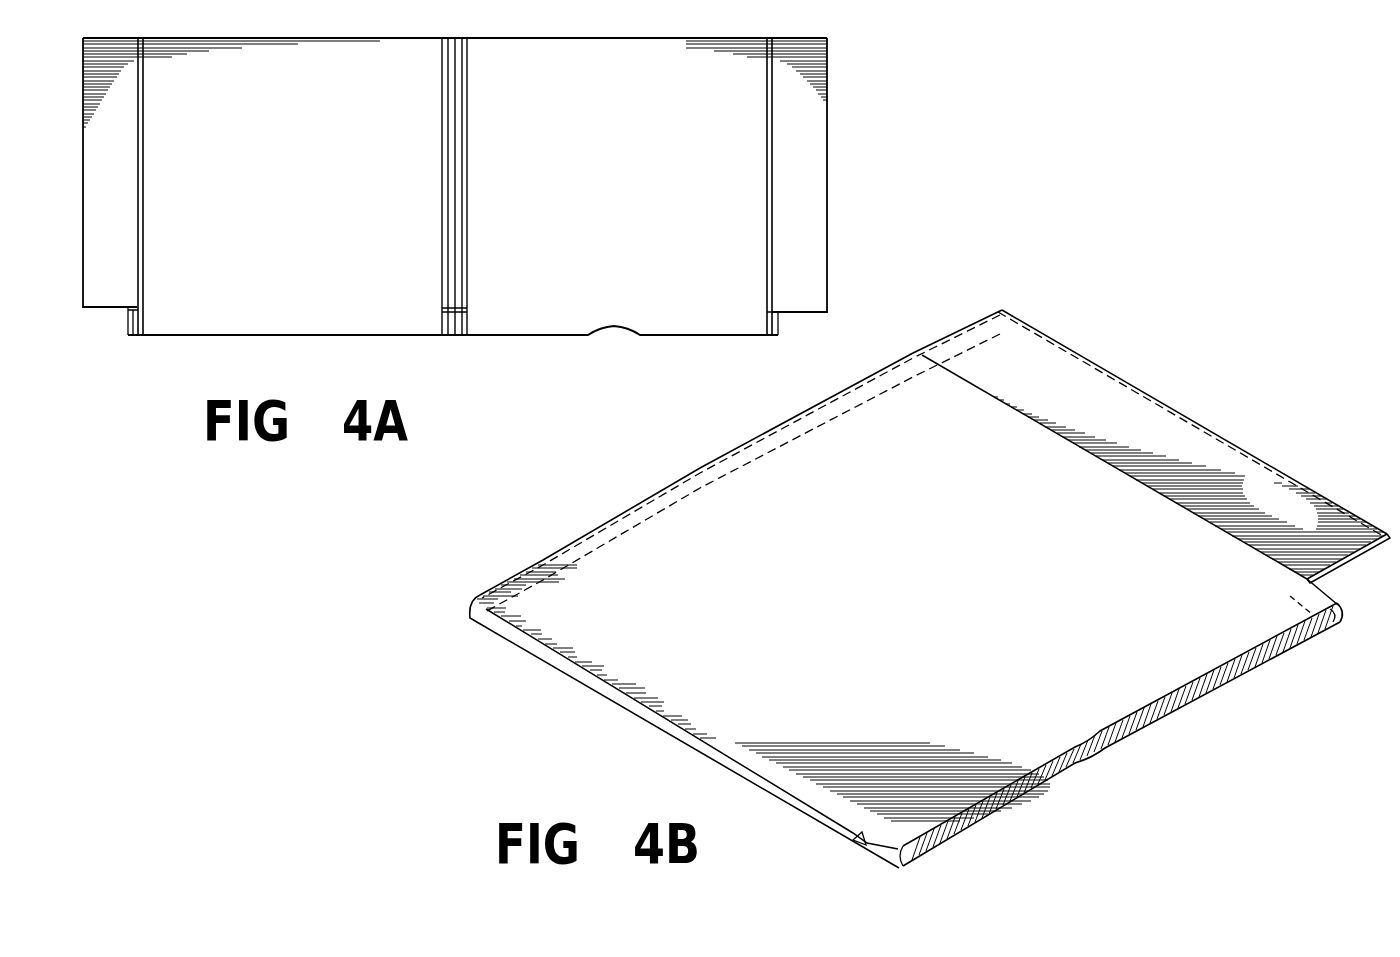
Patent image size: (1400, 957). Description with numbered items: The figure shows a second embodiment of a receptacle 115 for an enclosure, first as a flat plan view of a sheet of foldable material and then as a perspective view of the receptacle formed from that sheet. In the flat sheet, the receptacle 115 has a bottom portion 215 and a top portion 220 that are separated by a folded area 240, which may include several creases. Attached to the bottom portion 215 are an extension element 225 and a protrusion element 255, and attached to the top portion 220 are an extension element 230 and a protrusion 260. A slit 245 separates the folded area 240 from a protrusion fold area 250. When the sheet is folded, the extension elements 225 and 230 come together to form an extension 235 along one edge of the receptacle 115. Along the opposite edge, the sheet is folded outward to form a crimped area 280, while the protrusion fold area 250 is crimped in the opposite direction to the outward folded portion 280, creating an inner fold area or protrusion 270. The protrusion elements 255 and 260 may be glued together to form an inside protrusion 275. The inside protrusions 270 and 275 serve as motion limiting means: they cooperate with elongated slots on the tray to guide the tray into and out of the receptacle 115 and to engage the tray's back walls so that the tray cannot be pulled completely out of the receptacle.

In FIG. 4A, the receptacle 115 is at (846, 55).
In FIG. 4B, the receptacle 115 is at (1032, 302).
In FIG. 4A, the bottom portion 215 is at (598, 194).
In FIG. 4A, the top portion 220 is at (330, 194).
In FIG. 4B, the top portion 220 is at (583, 575).
In FIG. 4A, the extension element 225 is at (817, 194).
In FIG. 4A, the extension element 230 is at (128, 194).
In FIG. 4B, the extension element 230 is at (1155, 422).
In FIG. 4B, the extension 235 is at (1092, 362).
In FIG. 4A, the folded area 240 is at (458, 232).
In FIG. 4A, the slit 245 is at (443, 308).
In FIG. 4A, the protrusion fold area 250 is at (457, 330).
In FIG. 4A, the protrusion element 255 is at (771, 337).
In FIG. 4A, the protrusion element 260 is at (132, 336).
In FIG. 4B, the inner fold area or protrusion 270 is at (943, 843).
In FIG. 4B, the inside protrusion 275 is at (1320, 627).
In FIG. 4B, the crimped area 280 is at (613, 690).